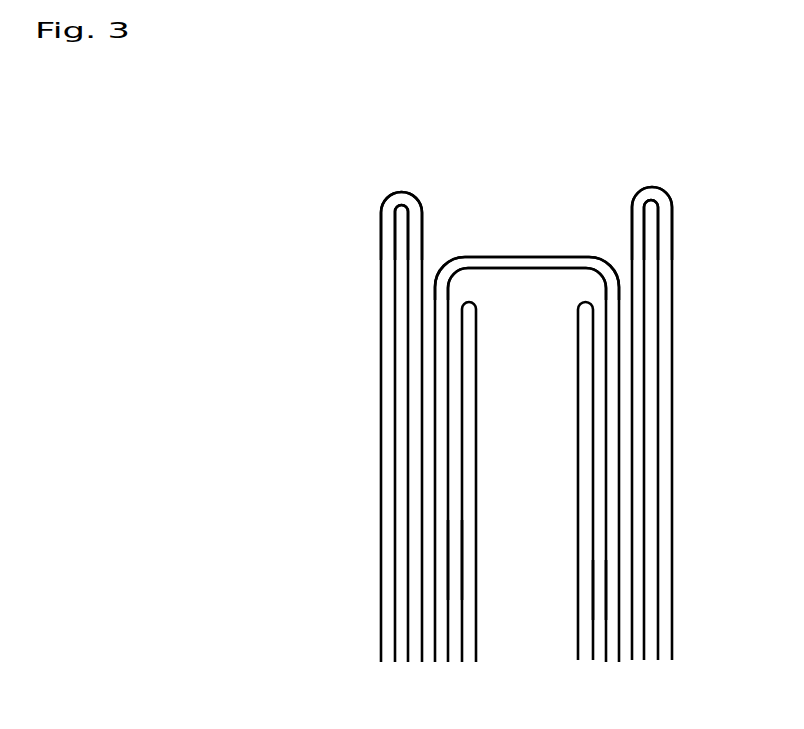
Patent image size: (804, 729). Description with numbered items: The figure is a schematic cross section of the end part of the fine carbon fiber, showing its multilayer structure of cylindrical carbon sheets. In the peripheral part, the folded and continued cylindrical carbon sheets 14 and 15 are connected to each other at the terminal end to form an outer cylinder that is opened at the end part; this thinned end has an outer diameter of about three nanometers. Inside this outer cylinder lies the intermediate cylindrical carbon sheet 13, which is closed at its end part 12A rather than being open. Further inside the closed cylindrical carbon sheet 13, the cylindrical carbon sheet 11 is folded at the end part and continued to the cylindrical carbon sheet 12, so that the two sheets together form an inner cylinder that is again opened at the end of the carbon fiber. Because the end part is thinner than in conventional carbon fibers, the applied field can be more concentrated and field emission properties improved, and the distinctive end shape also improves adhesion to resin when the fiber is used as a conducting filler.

The cylindrical carbon sheet 11 is at (478, 420).
The cylindrical carbon sheet 12 is at (478, 473).
The end part 12A is at (525, 246).
The cylindrical carbon sheet 13 is at (481, 540).
The cylindrical carbon sheet 14 is at (423, 231).
The cylindrical carbon sheet 15 is at (394, 249).